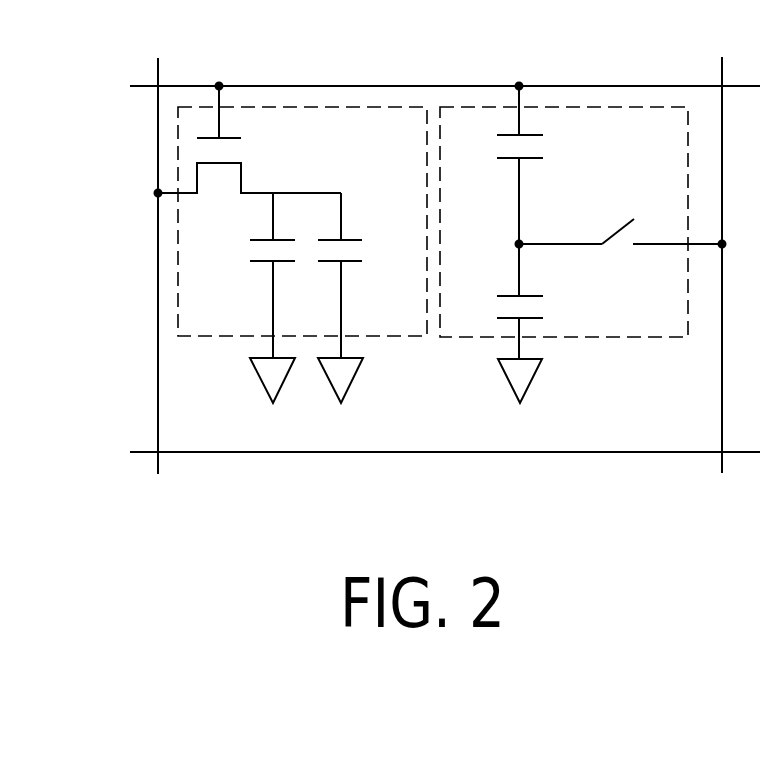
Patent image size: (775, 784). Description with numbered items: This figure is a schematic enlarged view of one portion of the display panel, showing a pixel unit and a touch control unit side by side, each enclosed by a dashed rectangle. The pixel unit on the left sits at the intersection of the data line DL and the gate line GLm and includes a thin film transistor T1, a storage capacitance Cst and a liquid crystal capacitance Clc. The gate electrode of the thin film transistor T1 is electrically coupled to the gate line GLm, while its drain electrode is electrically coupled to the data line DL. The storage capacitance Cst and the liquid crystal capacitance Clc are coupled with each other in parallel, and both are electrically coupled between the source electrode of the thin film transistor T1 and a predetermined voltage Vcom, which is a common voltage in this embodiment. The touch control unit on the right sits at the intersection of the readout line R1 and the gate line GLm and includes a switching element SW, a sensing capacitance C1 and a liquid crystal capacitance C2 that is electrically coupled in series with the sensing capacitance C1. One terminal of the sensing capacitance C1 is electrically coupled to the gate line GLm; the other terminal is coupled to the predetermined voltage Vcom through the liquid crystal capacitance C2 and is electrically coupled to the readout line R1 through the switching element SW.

The data line DL is at (160, 245).
The gate line GLm is at (401, 87).
The readout line R1 is at (717, 286).
The thin film transistor T1 is at (248, 140).
The liquid crystal capacitance Clc is at (244, 275).
The storage capacitance Cst is at (367, 275).
The sensing capacitance C1 is at (500, 190).
The liquid crystal capacitance C2 is at (500, 325).
The switching element SW is at (621, 215).
The predetermined voltage Vcom is at (394, 399).